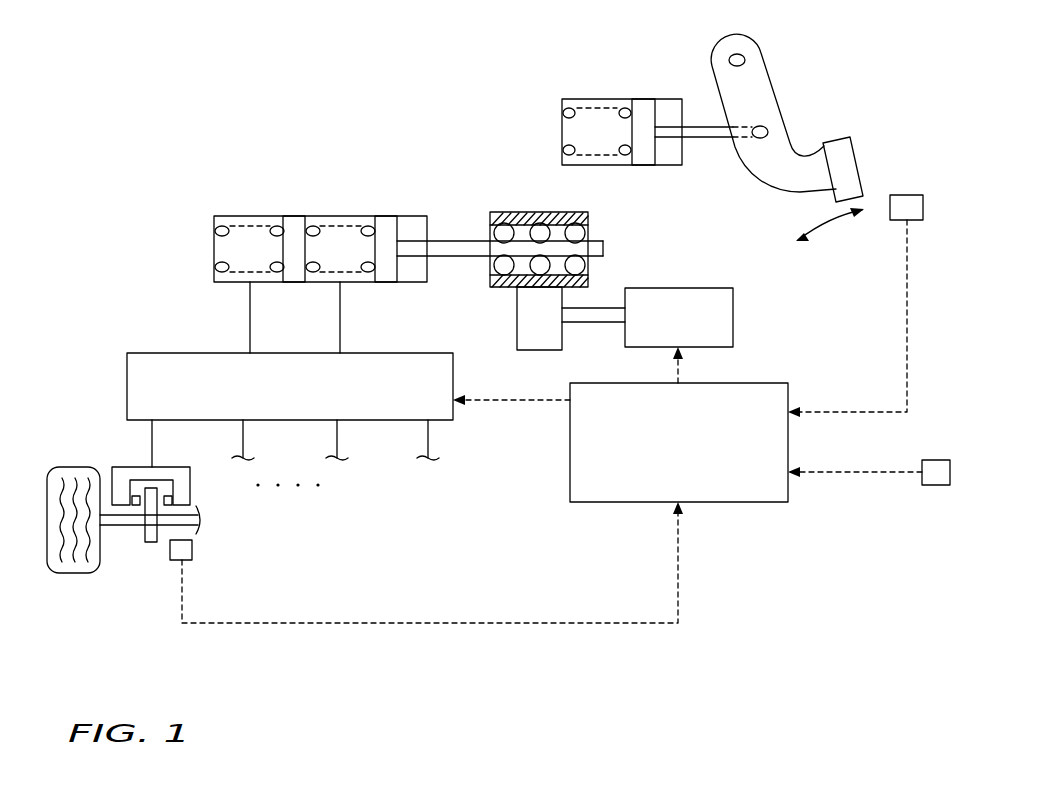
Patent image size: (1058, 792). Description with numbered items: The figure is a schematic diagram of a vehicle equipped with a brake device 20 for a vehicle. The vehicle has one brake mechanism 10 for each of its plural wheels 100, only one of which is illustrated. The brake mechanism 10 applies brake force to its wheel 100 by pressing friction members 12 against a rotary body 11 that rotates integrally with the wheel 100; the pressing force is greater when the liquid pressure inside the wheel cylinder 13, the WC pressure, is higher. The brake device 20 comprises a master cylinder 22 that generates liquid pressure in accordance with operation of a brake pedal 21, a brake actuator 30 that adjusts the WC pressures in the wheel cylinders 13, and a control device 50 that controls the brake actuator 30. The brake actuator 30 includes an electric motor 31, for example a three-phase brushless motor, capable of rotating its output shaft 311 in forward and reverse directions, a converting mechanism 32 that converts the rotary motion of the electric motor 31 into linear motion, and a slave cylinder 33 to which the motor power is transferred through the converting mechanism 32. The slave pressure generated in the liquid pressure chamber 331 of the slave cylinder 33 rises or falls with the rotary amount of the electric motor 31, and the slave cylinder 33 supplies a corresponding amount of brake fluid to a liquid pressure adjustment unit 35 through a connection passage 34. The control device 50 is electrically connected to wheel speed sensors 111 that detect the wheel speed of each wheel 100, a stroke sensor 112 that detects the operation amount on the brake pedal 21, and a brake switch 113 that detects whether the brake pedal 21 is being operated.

The brake device for a vehicle 20 is at (324, 120).
The brake pedal 21 is at (840, 141).
The master cylinder 22 is at (605, 166).
The brake actuator 30 is at (127, 261).
The electric motor 31 is at (737, 317).
The output shaft 311 is at (590, 323).
The converting mechanism 32 is at (504, 300).
The slave cylinder 33 is at (213, 248).
The liquid pressure chamber 331 is at (340, 246).
The connection passage 34 is at (330, 317).
The liquid pressure adjustment unit 35 is at (155, 353).
The control device 50 is at (790, 489).
The brake mechanism 10 is at (99, 457).
The rotary body 11 is at (152, 547).
The friction members 12 is at (169, 507).
The wheel cylinder 13 is at (165, 473).
The wheel 100 is at (65, 575).
The wheel speed sensor 111 is at (192, 550).
The stroke sensor 112 is at (908, 193).
The brake switch 113 is at (937, 459).